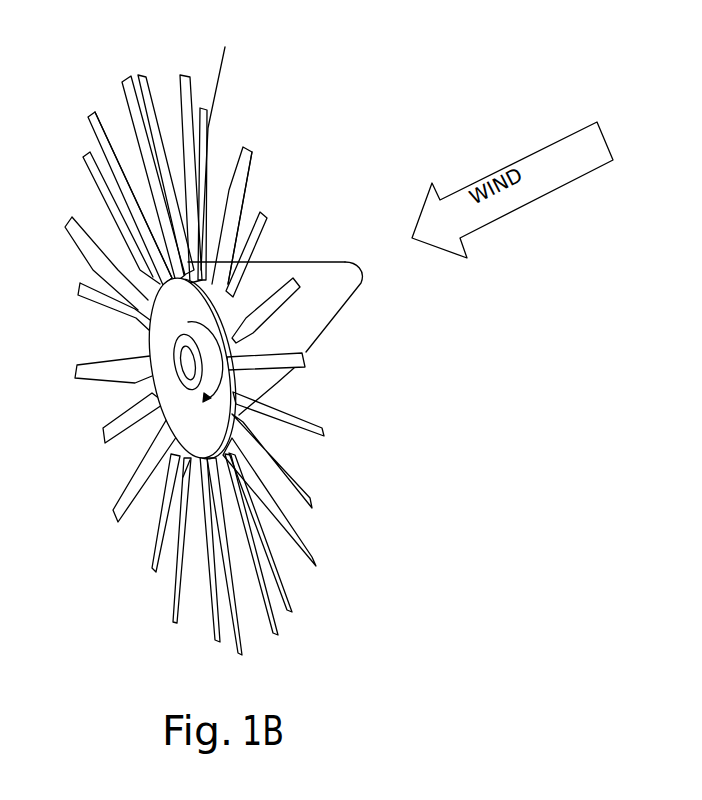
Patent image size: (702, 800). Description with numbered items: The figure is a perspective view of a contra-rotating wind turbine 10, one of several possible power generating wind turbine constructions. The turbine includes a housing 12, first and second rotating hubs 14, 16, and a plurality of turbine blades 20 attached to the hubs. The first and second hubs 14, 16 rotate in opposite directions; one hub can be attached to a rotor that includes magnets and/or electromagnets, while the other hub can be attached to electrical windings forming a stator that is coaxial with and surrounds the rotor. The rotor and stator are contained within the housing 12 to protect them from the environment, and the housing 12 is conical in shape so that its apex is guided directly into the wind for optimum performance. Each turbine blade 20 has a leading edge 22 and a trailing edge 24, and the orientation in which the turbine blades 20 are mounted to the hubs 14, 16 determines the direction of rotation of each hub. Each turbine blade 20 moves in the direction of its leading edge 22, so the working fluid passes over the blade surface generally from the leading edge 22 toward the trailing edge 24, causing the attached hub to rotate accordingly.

The wind turbine 10 is at (260, 330).
The housing 12 is at (320, 321).
The first rotating hub 14 is at (155, 352).
The second rotating hub 16 is at (258, 262).
The turbine blade 20 is at (183, 97).
The leading edge 22 is at (97, 123).
The trailing edge 24 is at (92, 132).